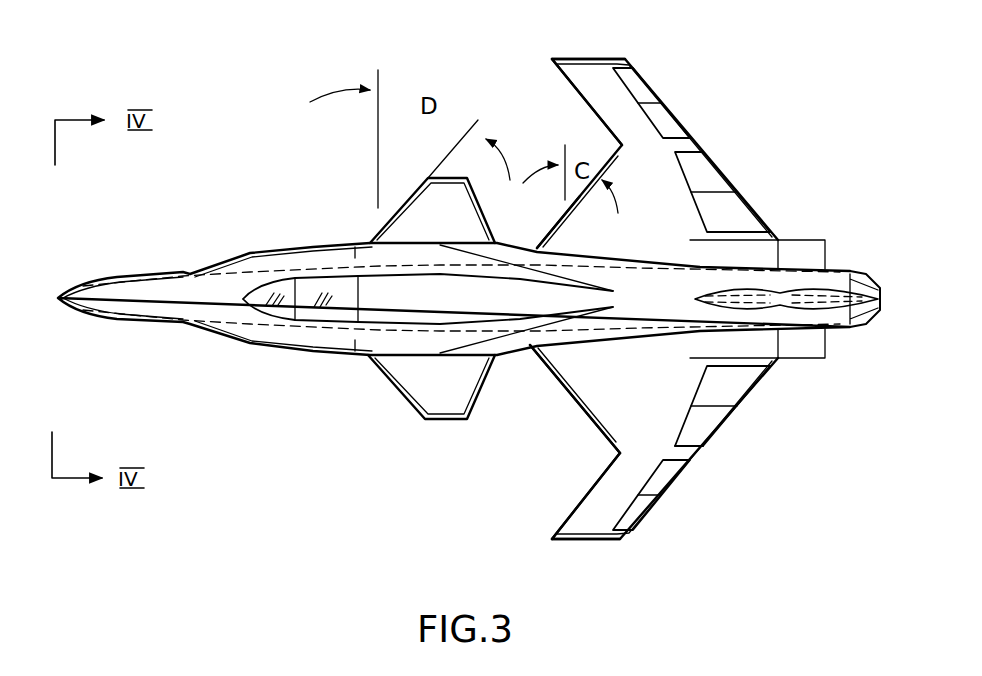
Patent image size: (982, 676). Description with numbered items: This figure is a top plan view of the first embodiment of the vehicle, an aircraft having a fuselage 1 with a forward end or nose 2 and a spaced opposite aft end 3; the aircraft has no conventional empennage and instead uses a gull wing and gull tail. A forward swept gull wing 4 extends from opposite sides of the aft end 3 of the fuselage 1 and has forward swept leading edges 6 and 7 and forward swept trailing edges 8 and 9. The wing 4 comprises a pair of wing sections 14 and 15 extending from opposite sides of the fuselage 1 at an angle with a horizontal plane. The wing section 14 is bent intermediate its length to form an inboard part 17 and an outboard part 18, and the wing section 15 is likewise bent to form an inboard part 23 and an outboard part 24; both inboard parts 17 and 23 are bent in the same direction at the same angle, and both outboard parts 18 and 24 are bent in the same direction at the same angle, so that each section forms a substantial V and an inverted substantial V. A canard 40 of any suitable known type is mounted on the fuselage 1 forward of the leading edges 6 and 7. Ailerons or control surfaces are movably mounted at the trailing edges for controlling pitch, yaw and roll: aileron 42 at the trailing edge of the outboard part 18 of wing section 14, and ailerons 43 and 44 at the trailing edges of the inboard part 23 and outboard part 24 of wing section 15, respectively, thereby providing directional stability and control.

The fuselage 1 is at (518, 345).
The nose 2 is at (74, 300).
The aft end 3 is at (860, 273).
The forward swept gull wing 4 is at (602, 418).
The forward swept leading edge 6 is at (563, 88).
The forward swept leading edge 7 is at (606, 453).
The forward swept trailing edge 8 is at (714, 134).
The forward swept trailing edge 9 is at (706, 453).
The wing section 14 is at (668, 225).
The wing section 15 is at (660, 390).
The inboard part 17 is at (572, 242).
The outboard part 18 is at (590, 62).
The inboard part 23 is at (580, 390).
The outboard part 24 is at (580, 518).
The canard 40 is at (420, 393).
The aileron 42 is at (635, 85).
The aileron 43 is at (717, 420).
The aileron 44 is at (632, 515).